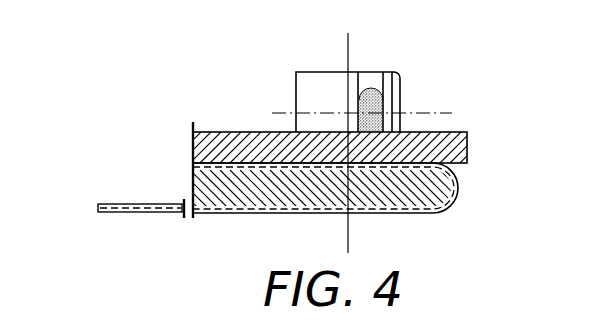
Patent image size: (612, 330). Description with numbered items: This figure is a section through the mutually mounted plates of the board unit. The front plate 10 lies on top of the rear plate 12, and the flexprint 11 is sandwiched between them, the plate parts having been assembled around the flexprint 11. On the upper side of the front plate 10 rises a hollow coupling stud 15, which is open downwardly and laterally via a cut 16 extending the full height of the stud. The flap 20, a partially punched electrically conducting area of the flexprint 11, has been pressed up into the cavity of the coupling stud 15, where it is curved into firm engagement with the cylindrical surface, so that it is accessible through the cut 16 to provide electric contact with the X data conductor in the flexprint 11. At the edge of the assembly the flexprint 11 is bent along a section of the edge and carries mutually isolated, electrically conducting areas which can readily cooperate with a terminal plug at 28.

The front plate 10 is at (428, 140).
The flexprint 11 is at (458, 176).
The rear plate 12 is at (392, 184).
The coupling stud 15 is at (315, 83).
The cut 16 is at (370, 80).
The flap 20 is at (395, 101).
The terminal plug 28 is at (120, 204).